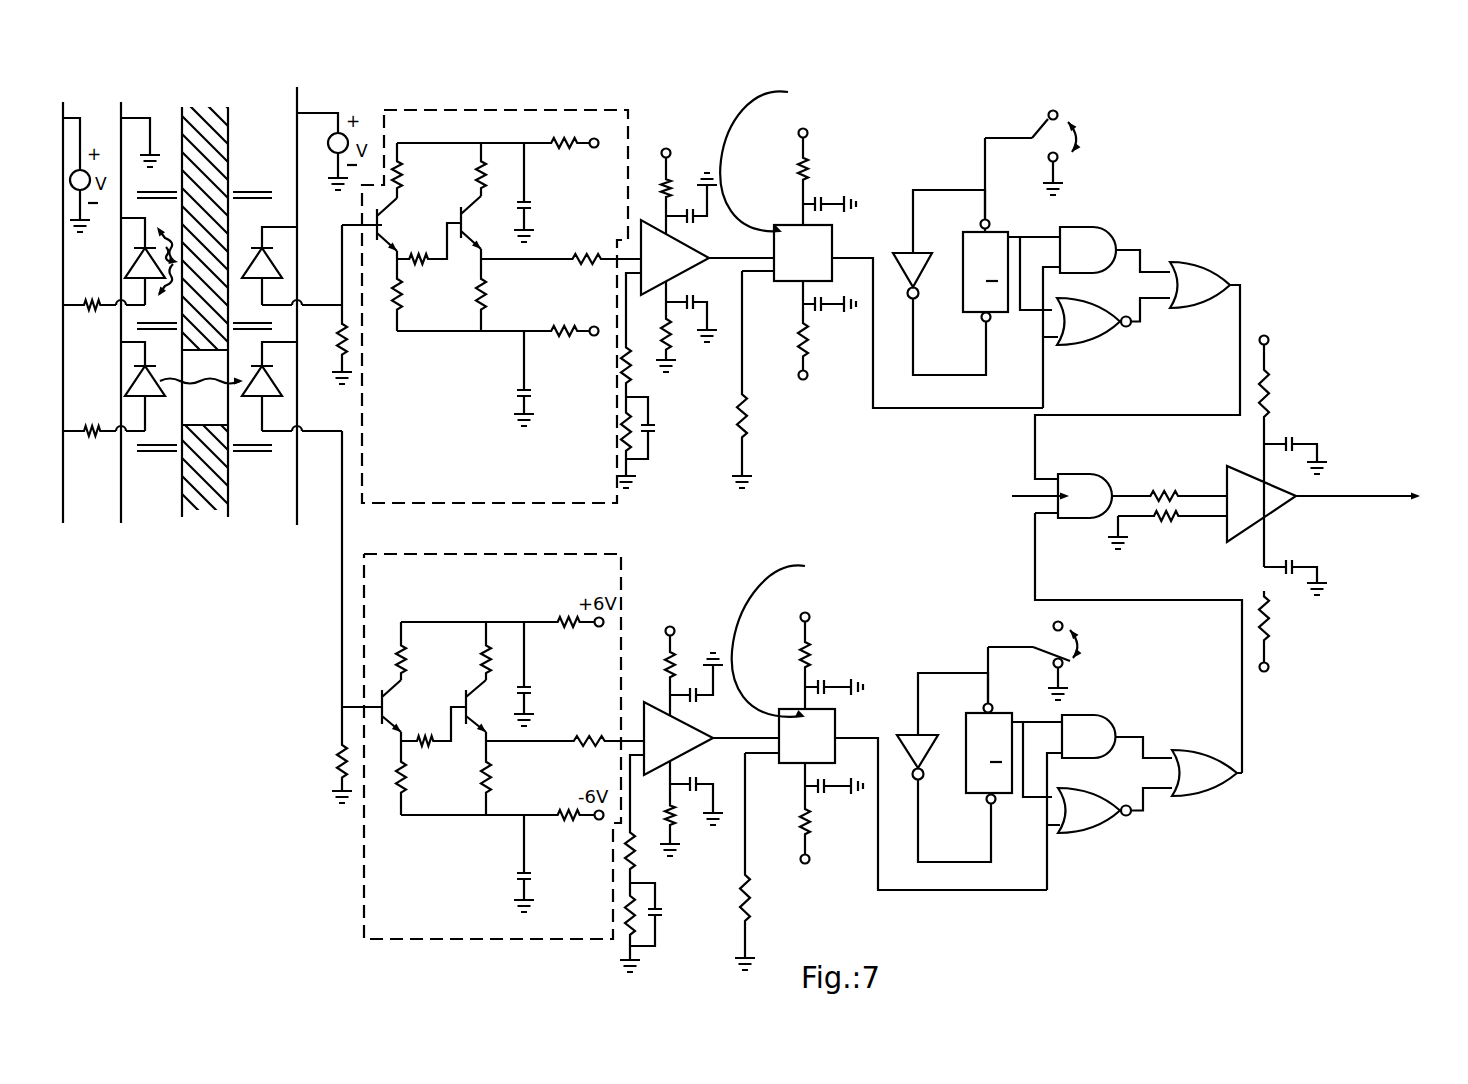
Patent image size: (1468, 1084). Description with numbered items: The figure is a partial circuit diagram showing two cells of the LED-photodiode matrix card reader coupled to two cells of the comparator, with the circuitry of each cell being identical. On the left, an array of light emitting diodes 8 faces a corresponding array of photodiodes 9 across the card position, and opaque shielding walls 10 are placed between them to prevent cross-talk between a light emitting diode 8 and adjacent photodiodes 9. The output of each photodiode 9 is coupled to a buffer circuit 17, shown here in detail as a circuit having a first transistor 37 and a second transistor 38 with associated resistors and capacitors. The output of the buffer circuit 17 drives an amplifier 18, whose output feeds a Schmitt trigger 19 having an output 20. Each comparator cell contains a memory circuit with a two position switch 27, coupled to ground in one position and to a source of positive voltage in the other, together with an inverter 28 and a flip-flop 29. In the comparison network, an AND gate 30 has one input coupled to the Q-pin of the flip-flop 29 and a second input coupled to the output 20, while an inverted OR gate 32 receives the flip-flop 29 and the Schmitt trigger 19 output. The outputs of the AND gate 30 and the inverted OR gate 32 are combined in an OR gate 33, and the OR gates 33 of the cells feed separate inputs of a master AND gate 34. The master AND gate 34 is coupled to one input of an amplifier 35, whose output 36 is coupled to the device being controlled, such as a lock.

The light emitting diode 8 is at (160, 219).
The photodiode 9 is at (266, 227).
The opaque shielding wall 10 is at (148, 191).
The buffer circuit 17 is at (483, 108).
The amplifier 18 is at (672, 243).
The Schmitt trigger 19 is at (815, 248).
The output 20 is at (841, 259).
The two position switch 27 is at (1033, 134).
The inverter 28 is at (906, 252).
The flip-flop 29 is at (975, 286).
The AND gate 30 is at (1080, 235).
The inverted OR gate 32 is at (1090, 340).
The OR gate 33 is at (1182, 268).
The master AND gate 34 is at (1080, 480).
The amplifier 35 is at (1280, 502).
The output 36 is at (1378, 486).
The first transistor 37 is at (392, 688).
The second transistor 38 is at (470, 686).